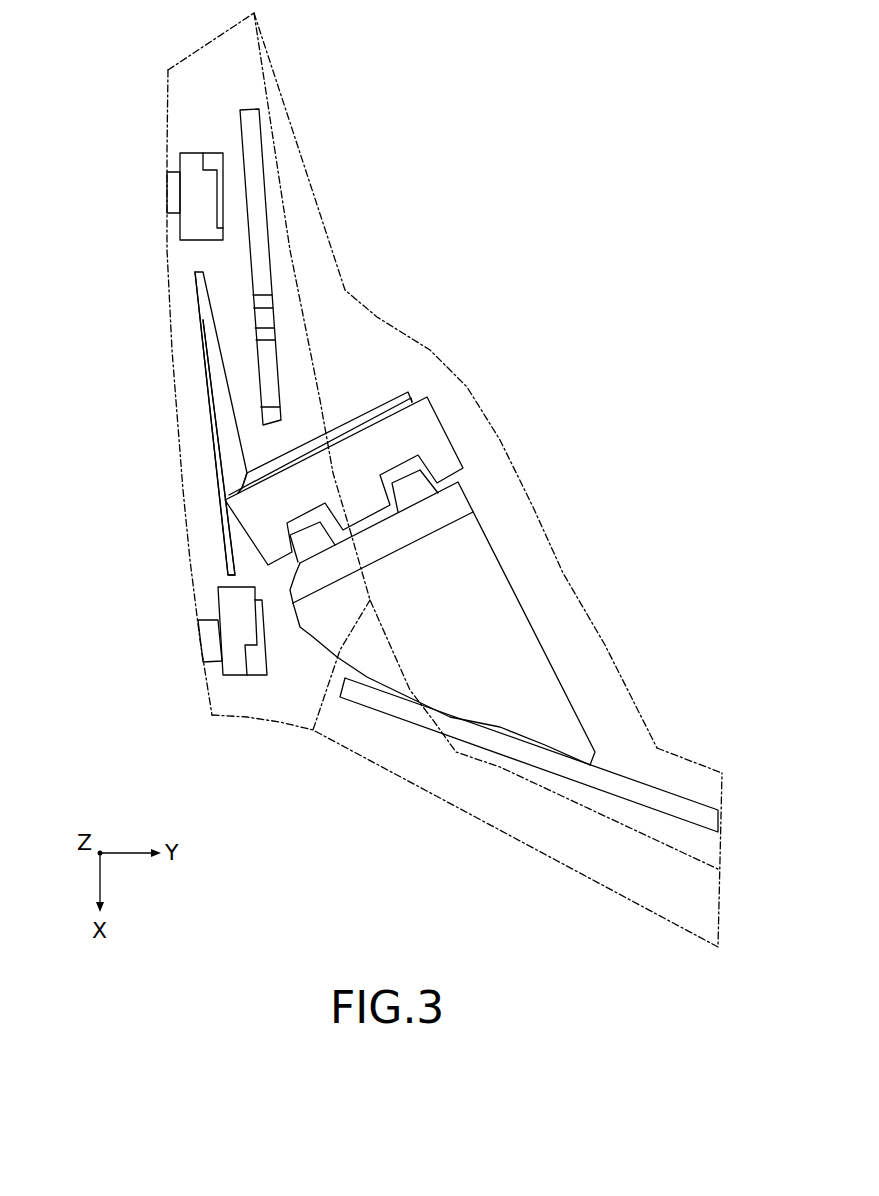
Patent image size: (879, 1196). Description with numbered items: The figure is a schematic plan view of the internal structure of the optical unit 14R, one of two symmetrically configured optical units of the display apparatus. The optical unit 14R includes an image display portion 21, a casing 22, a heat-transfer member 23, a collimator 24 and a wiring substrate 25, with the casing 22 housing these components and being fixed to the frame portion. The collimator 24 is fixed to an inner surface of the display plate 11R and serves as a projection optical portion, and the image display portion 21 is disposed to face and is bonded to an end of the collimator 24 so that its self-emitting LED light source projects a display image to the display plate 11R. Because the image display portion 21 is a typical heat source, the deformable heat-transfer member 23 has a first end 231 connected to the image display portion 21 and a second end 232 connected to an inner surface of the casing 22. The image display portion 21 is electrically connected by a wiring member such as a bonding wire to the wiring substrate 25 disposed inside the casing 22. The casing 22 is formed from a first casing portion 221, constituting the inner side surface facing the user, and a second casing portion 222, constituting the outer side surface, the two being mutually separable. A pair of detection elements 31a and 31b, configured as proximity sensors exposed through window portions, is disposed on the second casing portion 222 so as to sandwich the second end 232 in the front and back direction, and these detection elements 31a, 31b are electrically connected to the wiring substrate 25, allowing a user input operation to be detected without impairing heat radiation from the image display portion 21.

The display plate 11R is at (653, 788).
The optical unit 14R is at (553, 450).
The image display portion 21 is at (440, 447).
The casing 22 is at (160, 68).
The heat-transfer member 23 is at (195, 288).
The collimator 24 is at (492, 603).
The wiring substrate 25 is at (265, 198).
The first casing portion 221 is at (605, 648).
The second casing portion 222 is at (172, 438).
The first end 231 is at (360, 413).
The second end 232 is at (222, 553).
The detection element 31a is at (212, 638).
The detection element 31b is at (172, 190).